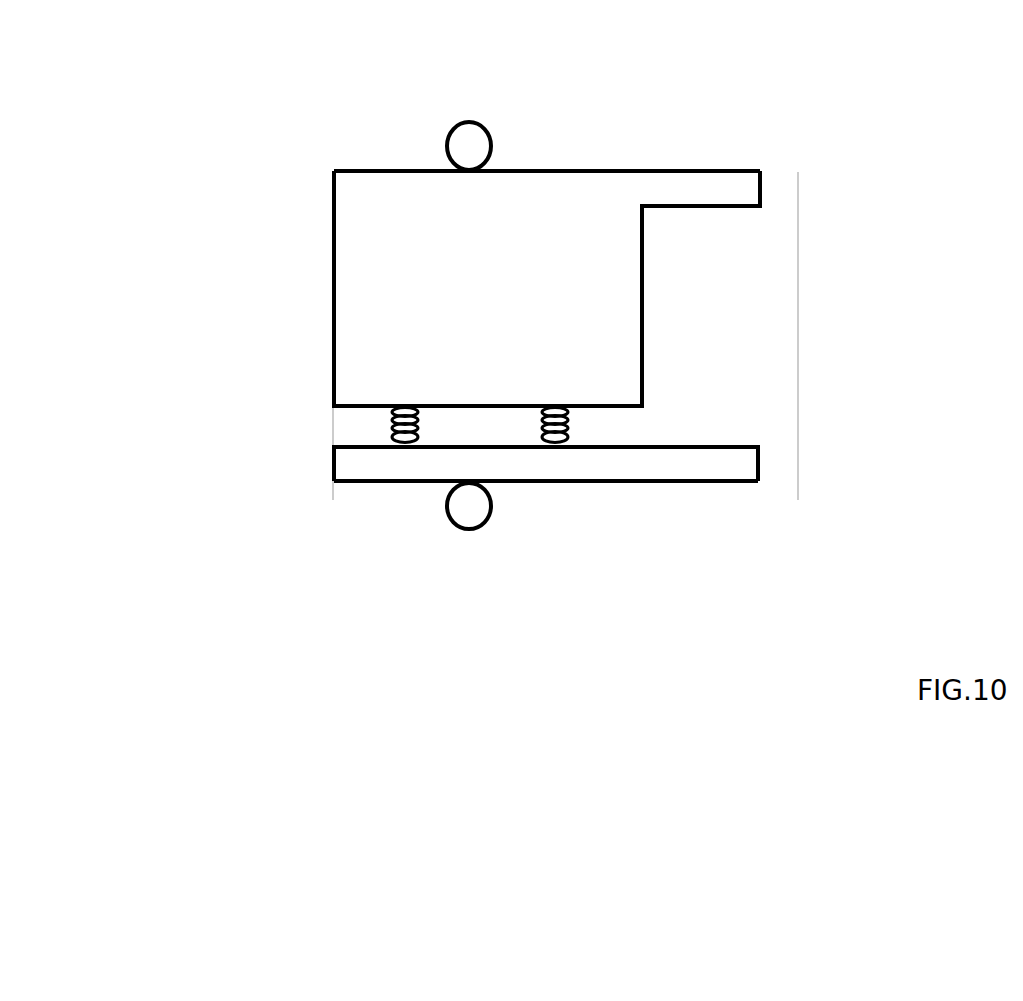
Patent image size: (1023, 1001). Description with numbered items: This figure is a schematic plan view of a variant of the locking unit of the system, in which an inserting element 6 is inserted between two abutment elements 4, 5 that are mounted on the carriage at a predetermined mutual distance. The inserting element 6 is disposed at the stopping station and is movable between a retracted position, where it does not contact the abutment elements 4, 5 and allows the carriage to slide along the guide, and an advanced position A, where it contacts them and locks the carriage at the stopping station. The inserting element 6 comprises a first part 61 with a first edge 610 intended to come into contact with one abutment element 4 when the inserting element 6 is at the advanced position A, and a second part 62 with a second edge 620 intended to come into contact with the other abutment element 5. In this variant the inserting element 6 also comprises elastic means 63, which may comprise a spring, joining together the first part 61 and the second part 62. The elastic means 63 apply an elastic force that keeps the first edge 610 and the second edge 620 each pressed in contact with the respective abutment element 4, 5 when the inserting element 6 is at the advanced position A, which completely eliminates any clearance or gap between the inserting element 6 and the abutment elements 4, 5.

The advanced position A is at (312, 140).
The abutment element 4 is at (462, 155).
The abutment element 5 is at (469, 505).
The inserting element 6 is at (310, 288).
The first part 61 is at (551, 190).
The first edge 610 is at (383, 168).
The second part 62 is at (627, 462).
The second edge 620 is at (398, 483).
The elastic means 63 is at (392, 430).